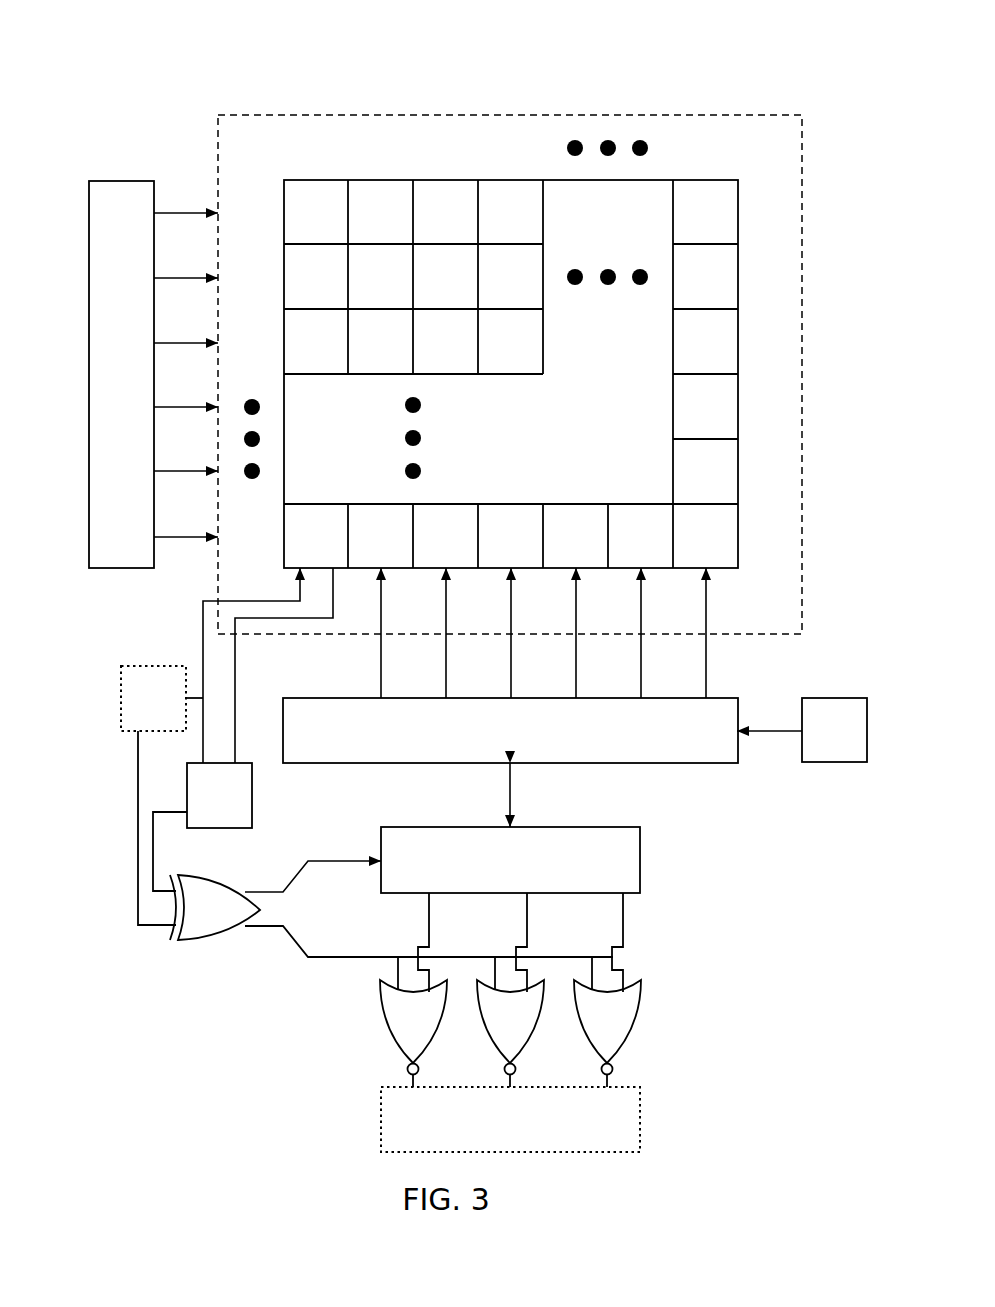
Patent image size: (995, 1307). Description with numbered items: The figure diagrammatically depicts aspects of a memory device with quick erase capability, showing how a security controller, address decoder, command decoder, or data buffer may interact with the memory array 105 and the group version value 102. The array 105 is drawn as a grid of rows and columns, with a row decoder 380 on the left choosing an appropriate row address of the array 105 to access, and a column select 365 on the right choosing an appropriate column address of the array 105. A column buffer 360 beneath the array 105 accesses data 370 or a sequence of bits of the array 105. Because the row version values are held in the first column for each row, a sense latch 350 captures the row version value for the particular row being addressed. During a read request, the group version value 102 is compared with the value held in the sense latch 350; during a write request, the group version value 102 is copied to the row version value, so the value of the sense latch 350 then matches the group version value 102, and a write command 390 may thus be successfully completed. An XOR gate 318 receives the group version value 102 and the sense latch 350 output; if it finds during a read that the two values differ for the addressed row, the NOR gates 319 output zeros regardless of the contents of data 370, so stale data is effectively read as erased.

The row decoder 380 is at (122, 197).
The array 105 is at (605, 115).
The group version value 102 is at (137, 687).
The sense latch 350 is at (218, 812).
The XOR gate 318 is at (203, 925).
The column buffer 360 is at (510, 730).
The column select 365 is at (852, 747).
The data 370 is at (510, 860).
The NOR gates 319 is at (510, 990).
The write command 390 is at (510, 1119).